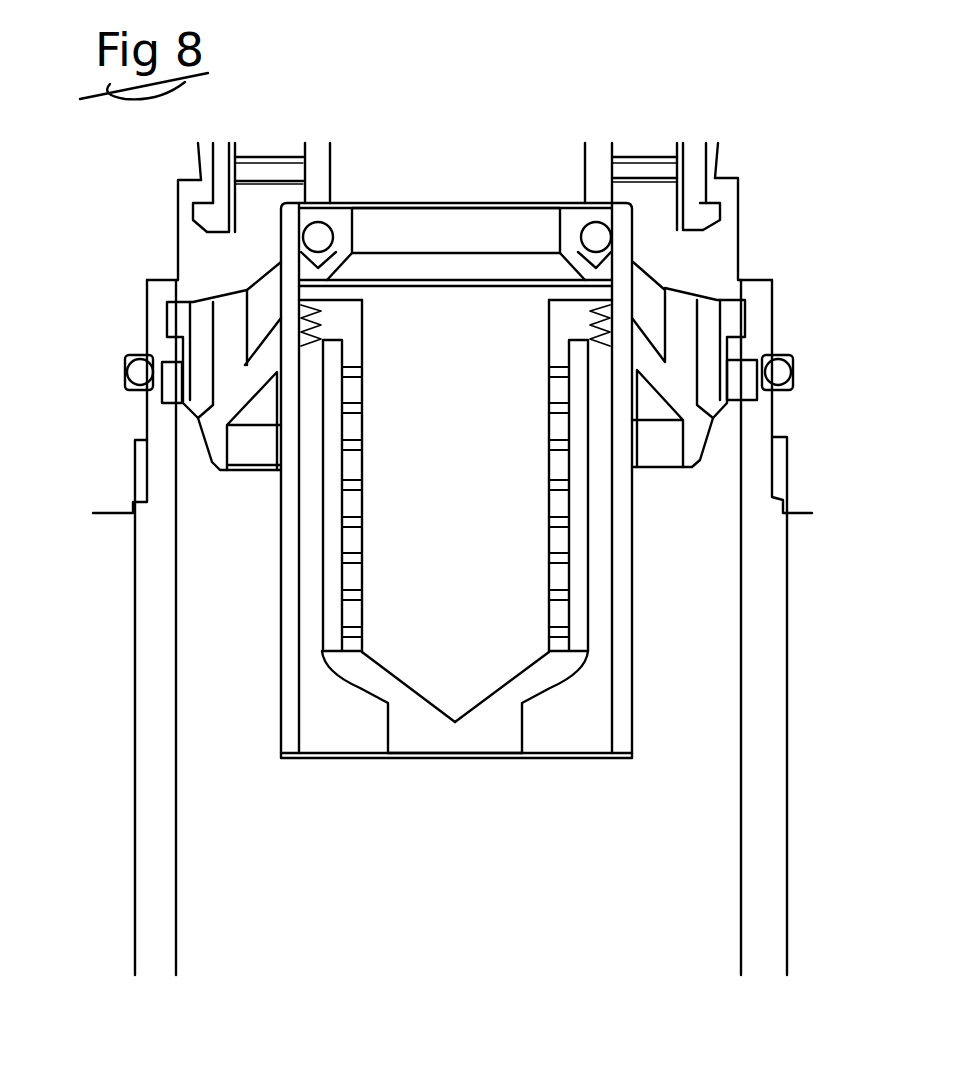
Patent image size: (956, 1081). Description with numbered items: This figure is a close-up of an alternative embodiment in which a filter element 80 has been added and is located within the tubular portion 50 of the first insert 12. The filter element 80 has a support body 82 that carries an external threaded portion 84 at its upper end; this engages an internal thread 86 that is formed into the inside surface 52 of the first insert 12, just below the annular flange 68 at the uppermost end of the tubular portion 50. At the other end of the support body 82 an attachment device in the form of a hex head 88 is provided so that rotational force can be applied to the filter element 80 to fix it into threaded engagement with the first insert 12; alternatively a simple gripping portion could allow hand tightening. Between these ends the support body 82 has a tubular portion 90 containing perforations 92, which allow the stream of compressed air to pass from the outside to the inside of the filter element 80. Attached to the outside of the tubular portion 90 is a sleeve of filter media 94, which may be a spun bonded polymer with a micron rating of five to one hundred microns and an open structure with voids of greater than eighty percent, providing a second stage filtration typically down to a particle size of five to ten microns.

The first insert 12 is at (215, 427).
The tubular portion 50 is at (290, 695).
The inside surface 52 is at (300, 758).
The annular flange 68 is at (573, 253).
The filter element 80 is at (365, 677).
The support body 82 is at (550, 670).
The external threaded portion 84 is at (303, 307).
The internal thread 86 is at (300, 341).
The hex head 88 is at (493, 745).
The tubular portion 90 is at (543, 654).
The perforations 92 is at (350, 445).
The filter media 94 is at (335, 601).